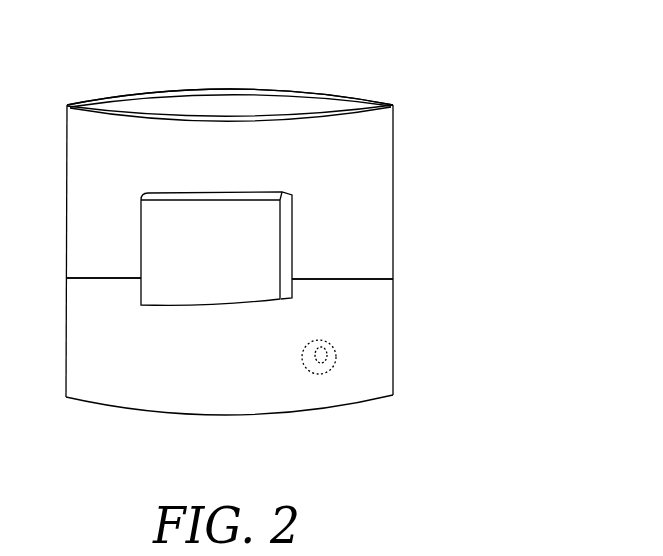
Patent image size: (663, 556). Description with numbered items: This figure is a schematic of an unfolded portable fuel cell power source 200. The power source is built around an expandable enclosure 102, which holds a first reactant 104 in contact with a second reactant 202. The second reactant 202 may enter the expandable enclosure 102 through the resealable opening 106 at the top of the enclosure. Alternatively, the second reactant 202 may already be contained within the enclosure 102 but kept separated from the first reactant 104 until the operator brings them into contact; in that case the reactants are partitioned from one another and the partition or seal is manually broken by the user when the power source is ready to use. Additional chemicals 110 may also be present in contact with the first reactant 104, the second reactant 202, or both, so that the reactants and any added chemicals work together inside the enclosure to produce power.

The portable fuel cell power source 200 is at (540, 36).
The expandable enclosure 102 is at (394, 145).
The resealable opening 106 is at (298, 103).
The second reactant 202 is at (394, 313).
The first reactant 104 is at (292, 250).
The additional chemicals 110 is at (319, 375).